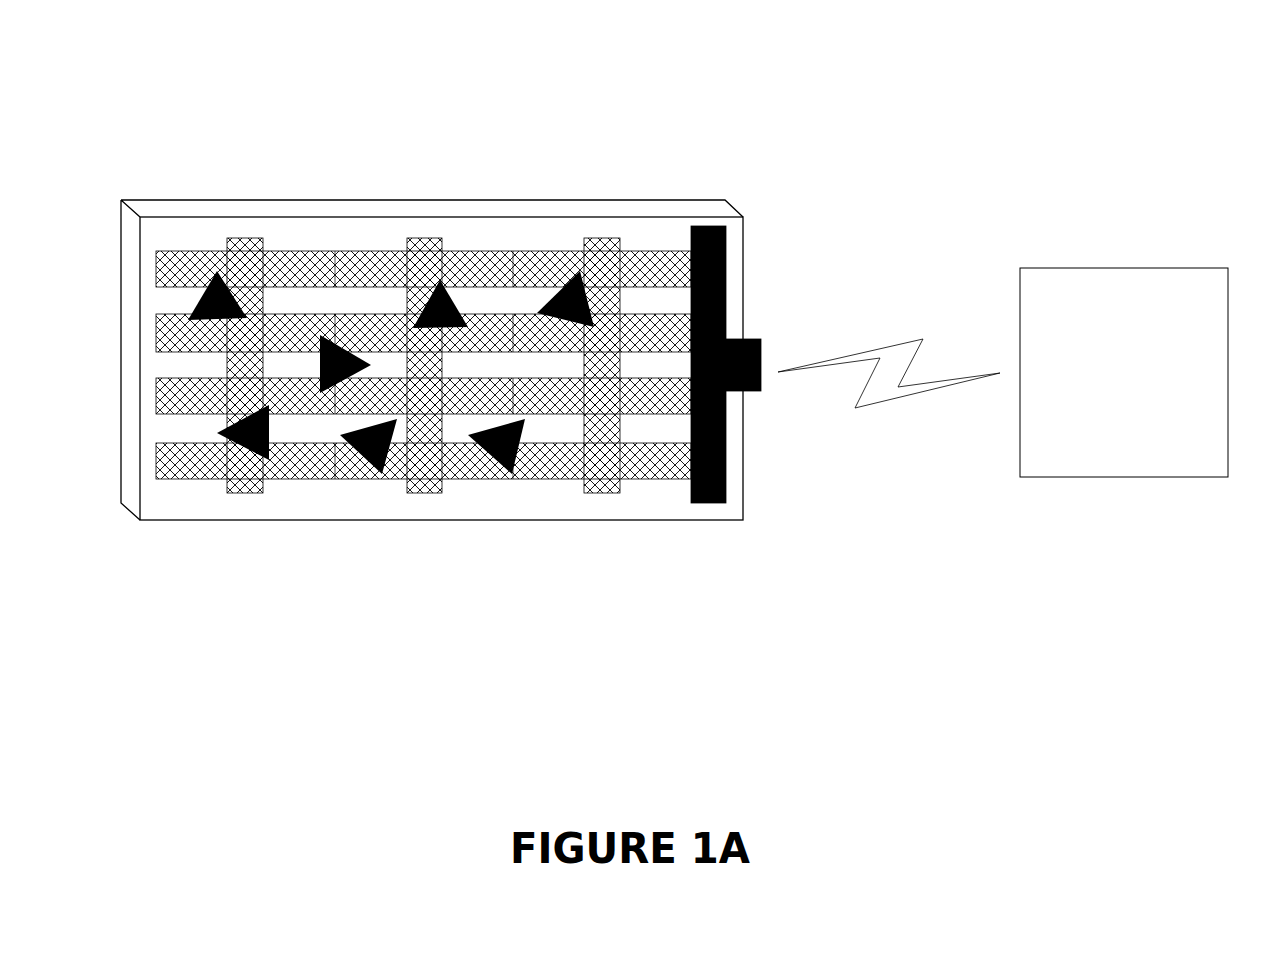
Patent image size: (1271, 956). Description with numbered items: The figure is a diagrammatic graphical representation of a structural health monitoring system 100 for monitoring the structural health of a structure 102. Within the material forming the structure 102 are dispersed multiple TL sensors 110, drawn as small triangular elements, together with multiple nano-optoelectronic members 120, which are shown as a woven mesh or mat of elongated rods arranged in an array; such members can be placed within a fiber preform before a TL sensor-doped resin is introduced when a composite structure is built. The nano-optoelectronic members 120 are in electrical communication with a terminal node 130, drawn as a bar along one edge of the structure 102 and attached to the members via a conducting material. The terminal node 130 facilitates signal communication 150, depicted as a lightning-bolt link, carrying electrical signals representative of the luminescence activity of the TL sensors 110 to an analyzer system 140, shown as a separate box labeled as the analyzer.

The structural health monitoring system 100 is at (512, 380).
The structure 102 is at (380, 503).
The TL sensors 110 is at (230, 290).
The nano-optoelectronic members 120 is at (485, 268).
The terminal node 130 is at (709, 363).
The analyzer system 140 is at (1124, 372).
The signal communication 150 is at (882, 389).